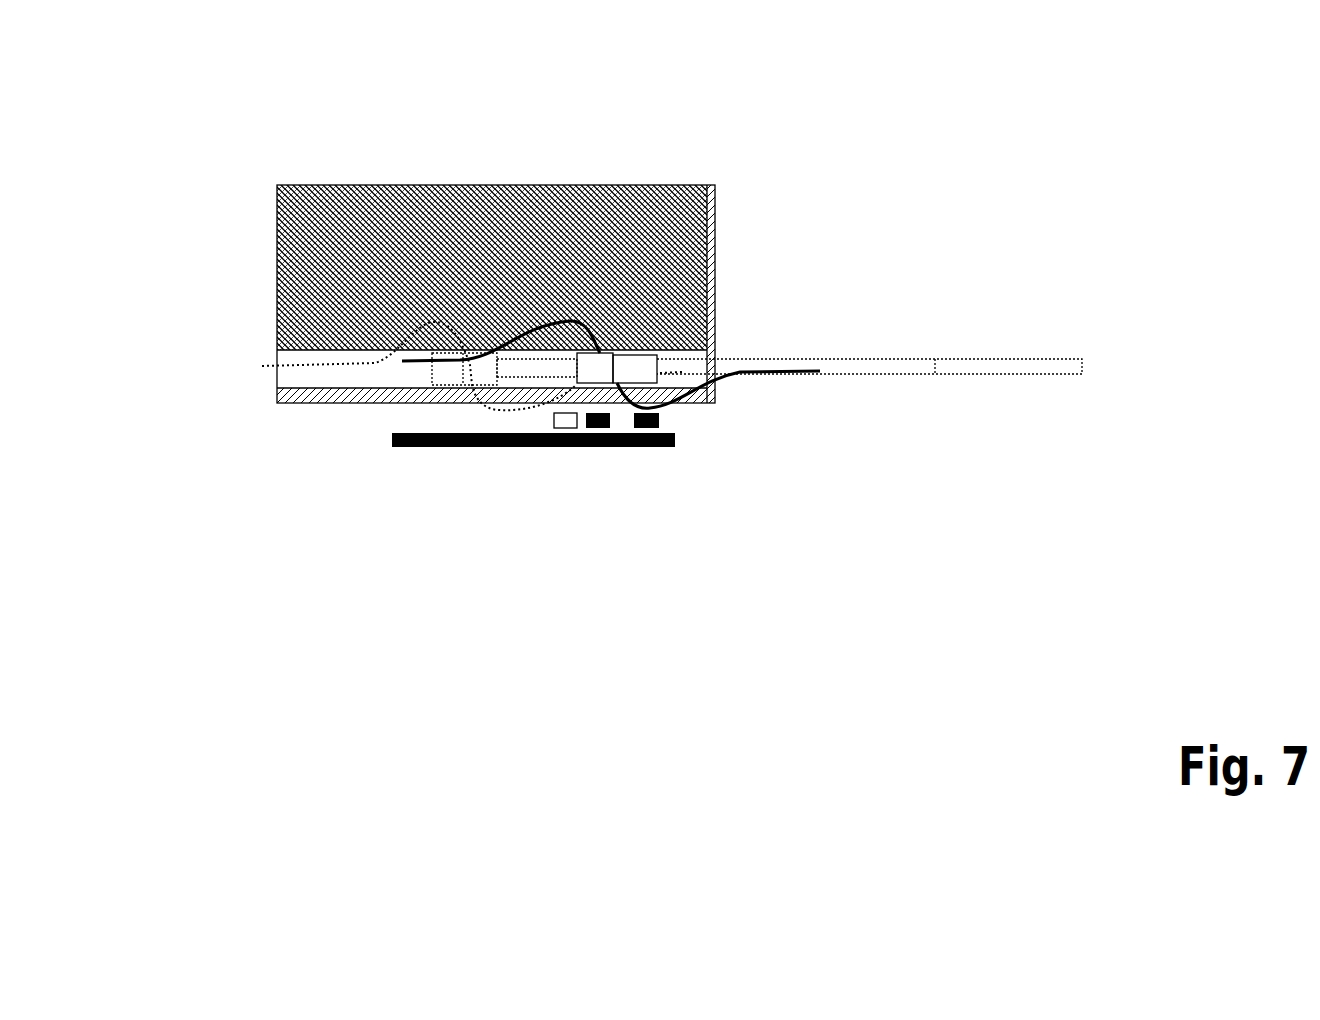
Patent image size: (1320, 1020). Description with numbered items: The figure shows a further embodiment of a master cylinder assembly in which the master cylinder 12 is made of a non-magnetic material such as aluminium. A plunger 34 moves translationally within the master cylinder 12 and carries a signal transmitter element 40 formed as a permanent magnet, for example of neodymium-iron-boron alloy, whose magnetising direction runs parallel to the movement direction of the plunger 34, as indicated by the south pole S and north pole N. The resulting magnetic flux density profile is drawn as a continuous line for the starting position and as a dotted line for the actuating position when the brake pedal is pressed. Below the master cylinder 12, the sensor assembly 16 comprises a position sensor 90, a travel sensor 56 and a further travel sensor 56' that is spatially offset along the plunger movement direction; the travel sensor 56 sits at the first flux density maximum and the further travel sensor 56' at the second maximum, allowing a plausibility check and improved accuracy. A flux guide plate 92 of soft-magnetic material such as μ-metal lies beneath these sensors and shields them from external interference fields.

The master cylinder 12 is at (257, 187).
The signal transmitter element 40 is at (650, 353).
The plunger 34 is at (965, 370).
The flux guide plate 92 is at (417, 450).
The further travel sensor 56' is at (518, 497).
The position sensor 90 is at (593, 448).
The travel sensor 56 is at (624, 497).
The sensor assembly 16 is at (692, 433).